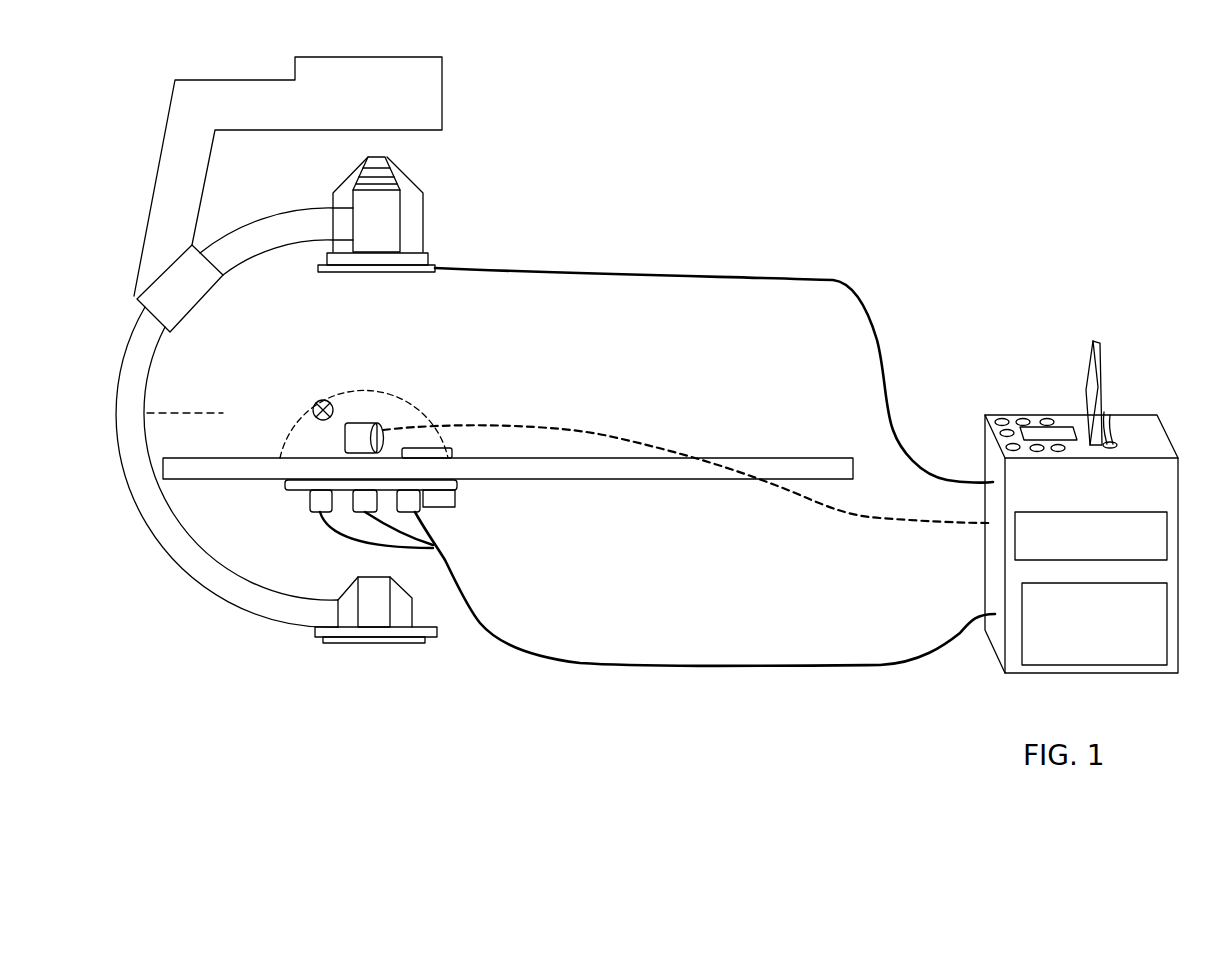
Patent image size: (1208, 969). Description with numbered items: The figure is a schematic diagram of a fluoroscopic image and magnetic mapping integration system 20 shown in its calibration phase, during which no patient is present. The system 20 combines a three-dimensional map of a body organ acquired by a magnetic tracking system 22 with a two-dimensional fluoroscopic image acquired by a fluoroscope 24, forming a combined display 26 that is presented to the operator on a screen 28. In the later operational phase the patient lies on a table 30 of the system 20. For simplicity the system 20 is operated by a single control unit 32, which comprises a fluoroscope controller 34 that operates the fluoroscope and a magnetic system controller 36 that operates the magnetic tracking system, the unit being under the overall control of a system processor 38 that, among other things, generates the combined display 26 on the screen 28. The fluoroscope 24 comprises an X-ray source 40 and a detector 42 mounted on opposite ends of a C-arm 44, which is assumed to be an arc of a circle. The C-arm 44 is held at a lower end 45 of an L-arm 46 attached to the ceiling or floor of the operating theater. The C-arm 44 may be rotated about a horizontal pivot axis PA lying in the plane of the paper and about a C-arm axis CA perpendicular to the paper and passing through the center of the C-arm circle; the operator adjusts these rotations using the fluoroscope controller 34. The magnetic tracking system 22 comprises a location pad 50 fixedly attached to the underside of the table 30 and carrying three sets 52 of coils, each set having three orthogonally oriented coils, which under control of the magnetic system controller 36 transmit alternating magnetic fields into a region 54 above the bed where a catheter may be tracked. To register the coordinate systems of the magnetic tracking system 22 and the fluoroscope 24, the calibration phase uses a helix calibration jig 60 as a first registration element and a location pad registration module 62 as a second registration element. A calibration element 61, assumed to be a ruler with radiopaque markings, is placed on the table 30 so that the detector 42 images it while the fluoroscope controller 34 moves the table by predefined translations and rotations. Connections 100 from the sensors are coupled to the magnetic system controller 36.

The fluoroscopic image and magnetic mapping integration system 20 is at (927, 247).
The magnetic tracking system 22 is at (505, 528).
The fluoroscope 24 is at (527, 205).
The combined display 26 is at (1085, 392).
The screen 28 is at (1097, 342).
The table 30 is at (653, 477).
The control unit 32 is at (1127, 415).
The fluoroscope controller 34 is at (1013, 535).
The magnetic system controller 36 is at (1138, 666).
The system processor 38 is at (1000, 682).
The X-ray source 40 is at (367, 645).
The detector 42 is at (419, 178).
The C-arm 44 is at (247, 257).
The lower end 45 is at (138, 250).
The L-arm 46 is at (442, 73).
The location pad 50 is at (460, 485).
The sets of coils 52 is at (333, 500).
The region 54 is at (398, 368).
The helix calibration jig 60 is at (364, 424).
The calibration element 61 is at (430, 449).
The location pad registration module 62 is at (452, 508).
The connections 100 is at (612, 433).